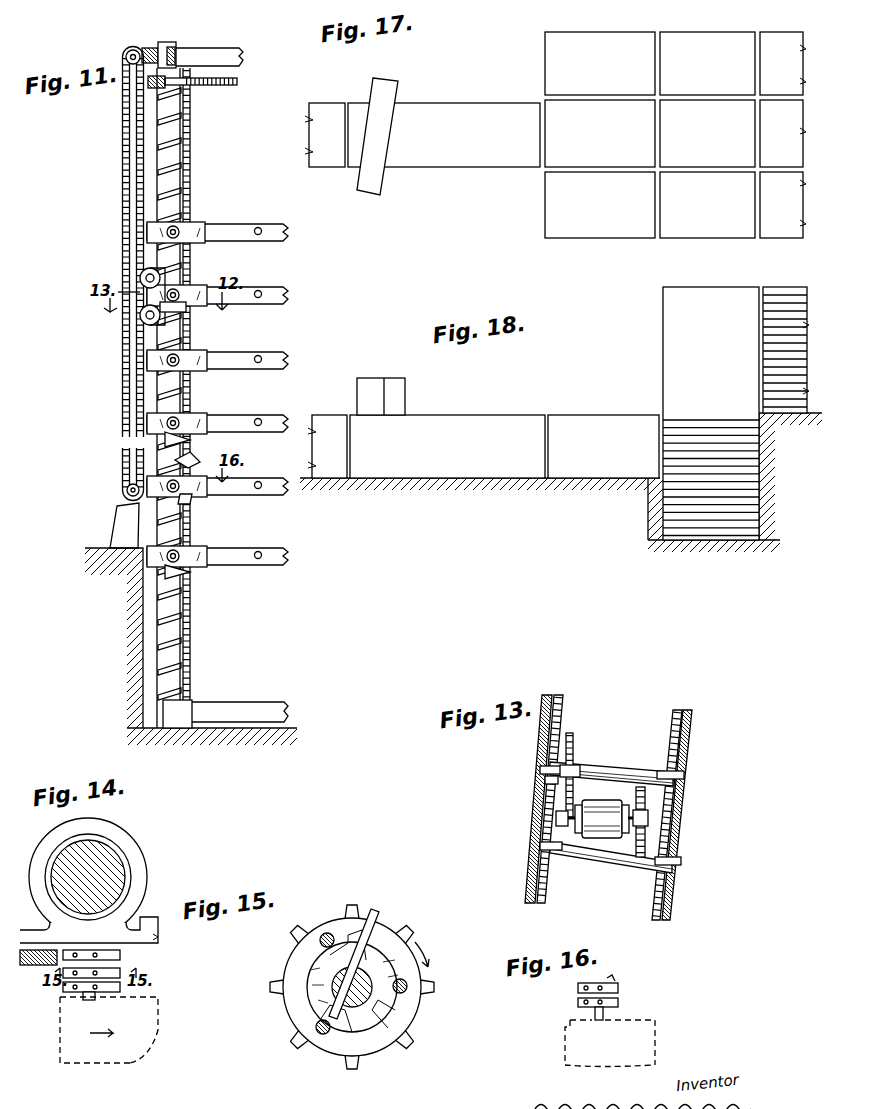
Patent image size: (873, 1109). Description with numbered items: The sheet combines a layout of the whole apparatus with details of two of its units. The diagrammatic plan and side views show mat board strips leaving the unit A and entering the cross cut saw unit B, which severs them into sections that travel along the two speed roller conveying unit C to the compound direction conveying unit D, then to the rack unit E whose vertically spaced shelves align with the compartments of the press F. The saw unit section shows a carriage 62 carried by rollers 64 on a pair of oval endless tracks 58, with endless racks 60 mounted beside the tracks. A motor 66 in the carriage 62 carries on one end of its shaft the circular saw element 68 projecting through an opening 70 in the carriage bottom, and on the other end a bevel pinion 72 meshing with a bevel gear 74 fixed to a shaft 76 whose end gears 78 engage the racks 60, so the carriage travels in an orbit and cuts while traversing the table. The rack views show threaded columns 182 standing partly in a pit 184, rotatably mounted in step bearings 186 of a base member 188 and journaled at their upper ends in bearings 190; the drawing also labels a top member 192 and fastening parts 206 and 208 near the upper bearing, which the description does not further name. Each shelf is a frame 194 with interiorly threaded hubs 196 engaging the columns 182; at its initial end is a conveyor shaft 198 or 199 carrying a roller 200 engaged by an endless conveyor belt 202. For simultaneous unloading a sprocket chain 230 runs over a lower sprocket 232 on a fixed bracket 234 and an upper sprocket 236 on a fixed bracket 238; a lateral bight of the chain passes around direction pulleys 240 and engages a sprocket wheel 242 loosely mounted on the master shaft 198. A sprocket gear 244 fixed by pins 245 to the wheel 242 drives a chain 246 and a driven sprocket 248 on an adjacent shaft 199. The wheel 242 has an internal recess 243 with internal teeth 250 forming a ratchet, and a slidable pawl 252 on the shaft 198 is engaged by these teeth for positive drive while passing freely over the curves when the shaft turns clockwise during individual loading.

In FIG. 11, the threaded columns 182 is at (190, 630).
In FIG. 14, the threaded columns 182 is at (122, 874).
In FIG. 11, the pit 184 is at (143, 655).
In FIG. 18, the pit 184 is at (660, 522).
In FIG. 11, the step bearings 186 is at (200, 706).
In FIG. 11, the base member 188 is at (250, 706).
In FIG. 11, the bearings 190 is at (178, 44).
In FIG. 11, the top bar 192 is at (209, 56).
In FIG. 11, the frame 194 is at (270, 240).
In FIG. 14, the frame 194 is at (136, 926).
In FIG. 11, the interiorly threaded hubs 196 is at (196, 224).
In FIG. 14, the interiorly threaded hubs 196 is at (116, 846).
In FIG. 11, the conveyor shaft 198 is at (190, 307).
In FIG. 14, the conveyor shaft 198 is at (93, 1001).
In FIG. 15, the conveyor shaft 198 is at (360, 997).
In FIG. 11, the conveyor shaft 199 is at (192, 424).
In FIG. 16, the conveyor shaft 199 is at (604, 1014).
In FIG. 14, the roller 200 is at (150, 998).
In FIG. 16, the roller 200 is at (656, 1023).
In FIG. 14, the endless conveyor belt 202 is at (85, 1068).
In FIG. 16, the endless conveyor belt 202 is at (656, 1047).
In FIG. 11, the bolt 206 is at (226, 86).
In FIG. 11, the bolt head 208 is at (182, 86).
In FIG. 11, the sprocket chain 230 is at (126, 400).
In FIG. 11, the sprocket 232 is at (127, 494).
In FIG. 11, the fixed bracket 234 is at (125, 528).
In FIG. 11, the sprocket 236 is at (125, 58).
In FIG. 11, the fixed bracket 238 is at (152, 44).
In FIG. 11, the direction pulleys 240 is at (143, 276).
In FIG. 14, the direction pulleys 240 is at (37, 969).
In FIG. 14, the sprocket wheel 242 is at (106, 952).
In FIG. 15, the sprocket wheel 242 is at (390, 920).
In FIG. 15, the internal recess 243 is at (306, 1000).
In FIG. 11, the sprocket gear 244 is at (192, 500).
In FIG. 14, the sprocket gear 244 is at (64, 986).
In FIG. 16, the sprocket gear 244 is at (620, 1003).
In FIG. 15, the pins 245 is at (327, 933).
In FIG. 11, the chain 246 is at (186, 244).
In FIG. 16, the driven sprocket 248 is at (619, 989).
In FIG. 15, the internal teeth 250 is at (404, 1014).
In FIG. 15, the slidable pawl 252 is at (374, 913).
In FIG. 13, the endless tracks 58 is at (528, 893).
In FIG. 13, the endless racks 60 is at (541, 903).
In FIG. 13, the carriage 62 is at (612, 775).
In FIG. 13, the rollers 64 is at (546, 779).
In FIG. 13, the motor 66 is at (602, 819).
In FIG. 13, the circular saw element 68 is at (642, 789).
In FIG. 13, the opening 70 is at (644, 858).
In FIG. 13, the bevel pinion 72 is at (564, 828).
In FIG. 13, the bevel gear 74 is at (574, 746).
In FIG. 13, the shaft 76 is at (578, 774).
In FIG. 13, the gears 78 is at (542, 768).
In FIG. 17, the unit A is at (325, 135).
In FIG. 18, the unit A is at (327, 446).
In FIG. 17, the cross cut saw unit B is at (377, 136).
In FIG. 18, the cross cut saw unit B is at (381, 396).
In FIG. 17, the two speed roller conveying unit C is at (444, 135).
In FIG. 18, the two speed roller conveying unit C is at (447, 446).
In FIG. 17, the compound direction conveying unit D is at (600, 135).
In FIG. 18, the compound direction conveying unit D is at (603, 446).
In FIG. 11, the rack unit E is at (233, 228).
In FIG. 17, the rack unit E is at (707, 135).
In FIG. 18, the rack unit E is at (707, 427).
In FIG. 14, the rack unit E is at (60, 1010).
In FIG. 16, the rack unit E is at (566, 1050).
In FIG. 17, the press F is at (783, 135).
In FIG. 18, the press F is at (807, 376).